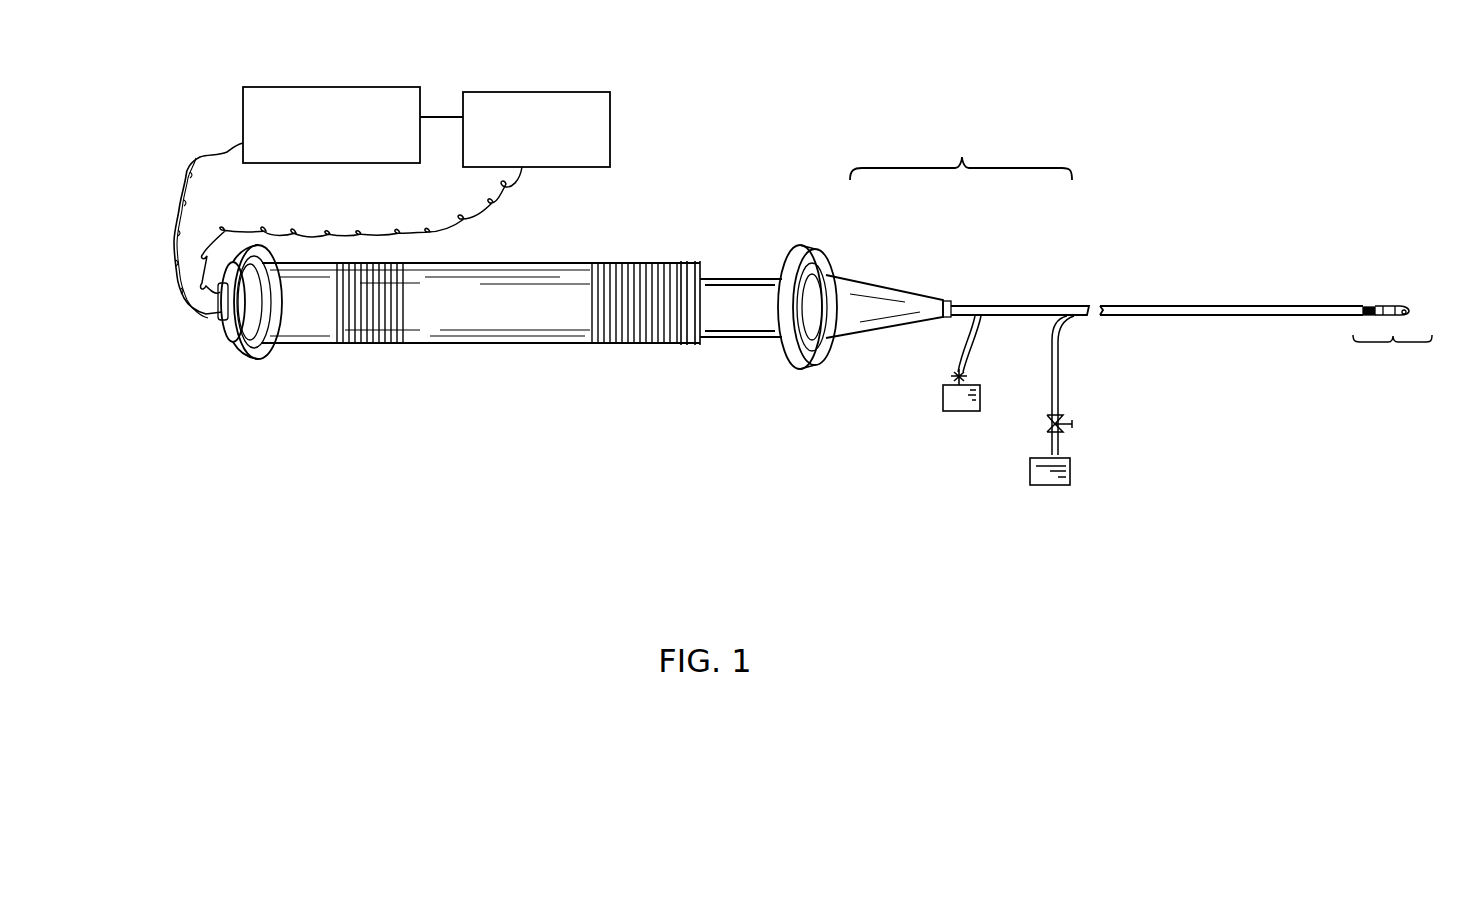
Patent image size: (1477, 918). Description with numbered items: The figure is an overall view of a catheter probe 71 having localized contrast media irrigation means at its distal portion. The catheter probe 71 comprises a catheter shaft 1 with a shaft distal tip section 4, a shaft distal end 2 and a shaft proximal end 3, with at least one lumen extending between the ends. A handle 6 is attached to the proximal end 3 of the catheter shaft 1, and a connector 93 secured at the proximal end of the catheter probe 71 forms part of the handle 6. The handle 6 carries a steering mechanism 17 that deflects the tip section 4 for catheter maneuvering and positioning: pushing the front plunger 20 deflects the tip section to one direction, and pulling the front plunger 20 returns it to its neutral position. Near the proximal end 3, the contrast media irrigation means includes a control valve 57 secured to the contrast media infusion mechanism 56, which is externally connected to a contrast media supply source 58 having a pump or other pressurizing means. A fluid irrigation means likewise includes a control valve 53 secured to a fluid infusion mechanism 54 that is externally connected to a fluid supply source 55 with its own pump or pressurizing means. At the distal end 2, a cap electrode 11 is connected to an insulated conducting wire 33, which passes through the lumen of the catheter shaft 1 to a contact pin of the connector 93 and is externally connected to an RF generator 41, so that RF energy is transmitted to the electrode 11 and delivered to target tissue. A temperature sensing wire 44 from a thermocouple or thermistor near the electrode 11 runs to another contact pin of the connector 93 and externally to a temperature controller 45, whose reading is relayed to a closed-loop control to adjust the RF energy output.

The catheter shaft 1 is at (1048, 300).
The shaft distal end 2 is at (1403, 302).
The shaft proximal end 3 is at (948, 298).
The shaft distal tip section 4 is at (1392, 343).
The handle 6 is at (532, 349).
The cap electrode 11 is at (1413, 310).
The steering mechanism 17 is at (750, 342).
The front plunger 20 is at (798, 372).
The insulated conducting wire 33 is at (468, 225).
The RF generator 41 is at (607, 100).
The temperature sensing wire 44 is at (192, 155).
The temperature controller 45 is at (407, 97).
The control valve 53 is at (967, 373).
The fluid infusion mechanism 54 is at (953, 372).
The fluid supply source 55 is at (955, 417).
The contrast media infusion mechanism 56 is at (1067, 378).
The control valve 57 is at (1090, 420).
The contrast media supply source 58 is at (1073, 467).
The catheter probe 71 is at (961, 147).
The connector 93 is at (232, 338).